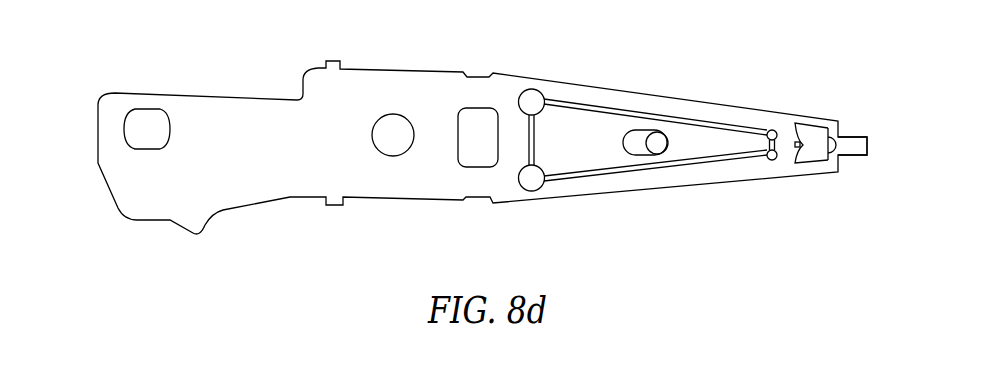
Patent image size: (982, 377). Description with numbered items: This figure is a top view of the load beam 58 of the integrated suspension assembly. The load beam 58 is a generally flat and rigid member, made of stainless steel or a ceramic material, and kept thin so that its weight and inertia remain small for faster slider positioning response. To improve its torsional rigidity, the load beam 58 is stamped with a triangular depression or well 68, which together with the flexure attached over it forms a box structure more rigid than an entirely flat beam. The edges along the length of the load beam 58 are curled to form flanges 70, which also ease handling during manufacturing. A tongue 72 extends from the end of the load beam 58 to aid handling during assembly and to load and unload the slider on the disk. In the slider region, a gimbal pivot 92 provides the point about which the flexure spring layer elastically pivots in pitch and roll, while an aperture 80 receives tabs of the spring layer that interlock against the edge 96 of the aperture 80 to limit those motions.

The load beam 58 is at (407, 202).
The triangular depression or well 68 is at (575, 127).
The flanges 70 is at (647, 93).
The tongue 72 is at (853, 150).
The aperture 80 is at (810, 143).
The gimbal pivot 92 is at (792, 140).
The edge of the aperture 96 is at (803, 123).